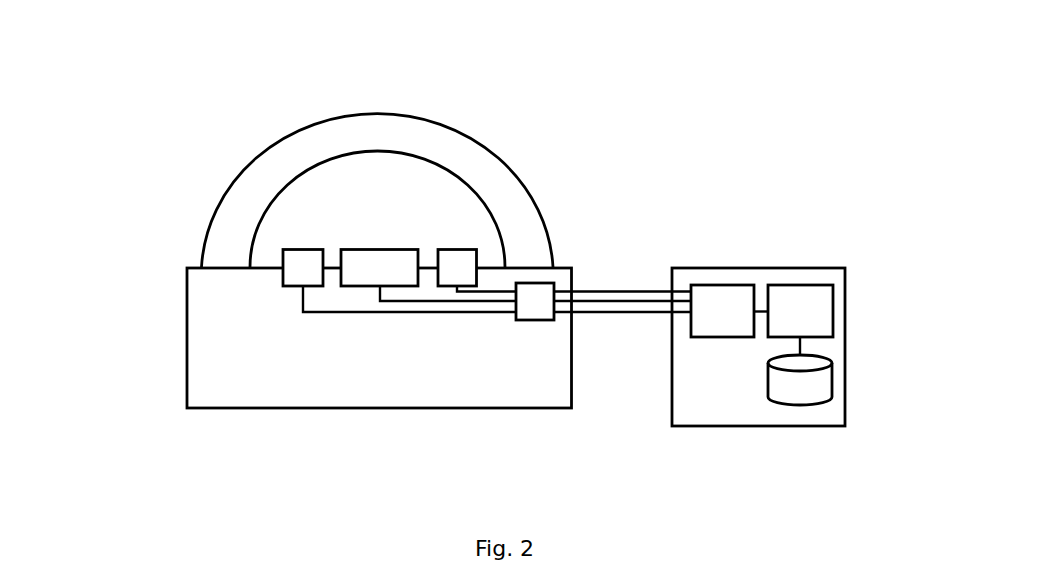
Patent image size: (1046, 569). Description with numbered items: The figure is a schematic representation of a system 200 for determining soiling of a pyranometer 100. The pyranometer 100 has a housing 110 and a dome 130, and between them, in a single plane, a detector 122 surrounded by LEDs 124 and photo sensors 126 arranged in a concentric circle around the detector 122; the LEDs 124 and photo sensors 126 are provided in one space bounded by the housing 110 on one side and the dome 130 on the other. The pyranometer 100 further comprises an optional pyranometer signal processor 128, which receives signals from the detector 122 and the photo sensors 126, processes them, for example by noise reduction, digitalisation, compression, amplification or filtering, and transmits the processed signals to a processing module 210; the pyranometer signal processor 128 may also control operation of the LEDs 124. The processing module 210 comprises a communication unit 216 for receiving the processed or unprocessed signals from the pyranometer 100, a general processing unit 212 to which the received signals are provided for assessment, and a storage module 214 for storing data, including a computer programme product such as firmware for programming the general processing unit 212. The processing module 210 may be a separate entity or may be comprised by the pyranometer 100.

The pyranometer 100 is at (526, 98).
The system 200 is at (955, 62).
The housing 110 is at (247, 409).
The dome 130 is at (283, 137).
The detector 122 is at (353, 250).
The LEDs 124 is at (282, 262).
The photo sensors 126 is at (440, 250).
The pyranometer signal processor 128 is at (530, 321).
The processing module 210 is at (780, 428).
The general processing unit 212 is at (833, 310).
The storage module 214 is at (833, 385).
The communication unit 216 is at (723, 285).